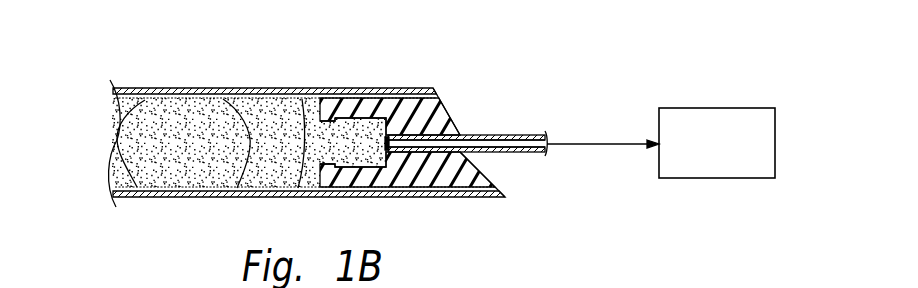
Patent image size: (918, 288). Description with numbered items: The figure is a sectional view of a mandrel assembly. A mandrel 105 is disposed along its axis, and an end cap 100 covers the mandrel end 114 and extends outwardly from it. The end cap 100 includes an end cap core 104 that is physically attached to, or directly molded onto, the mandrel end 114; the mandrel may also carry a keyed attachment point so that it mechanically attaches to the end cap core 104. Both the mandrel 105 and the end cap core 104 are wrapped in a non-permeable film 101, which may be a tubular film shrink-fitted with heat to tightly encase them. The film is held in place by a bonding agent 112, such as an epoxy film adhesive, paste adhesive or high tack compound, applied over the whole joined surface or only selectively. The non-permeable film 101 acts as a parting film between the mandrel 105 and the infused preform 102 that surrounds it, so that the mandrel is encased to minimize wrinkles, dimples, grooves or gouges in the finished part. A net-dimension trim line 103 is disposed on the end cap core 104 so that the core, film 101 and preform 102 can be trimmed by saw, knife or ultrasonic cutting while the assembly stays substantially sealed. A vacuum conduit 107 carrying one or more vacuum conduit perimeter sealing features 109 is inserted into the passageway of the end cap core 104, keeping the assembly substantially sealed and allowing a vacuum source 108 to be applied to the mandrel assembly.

The end cap 100 is at (441, 50).
The non-permeable film 101 is at (218, 88).
The preform 102 is at (293, 88).
The net-dimension trim line 103 is at (445, 115).
The end cap core 104 is at (480, 172).
The mandrel 105 is at (162, 177).
The vacuum conduit 107 is at (502, 135).
The vacuum source 108 is at (713, 108).
The vacuum conduit perimeter sealing feature 109 is at (440, 152).
The bonding agent 112 is at (420, 88).
The mandrel end 114 is at (353, 163).